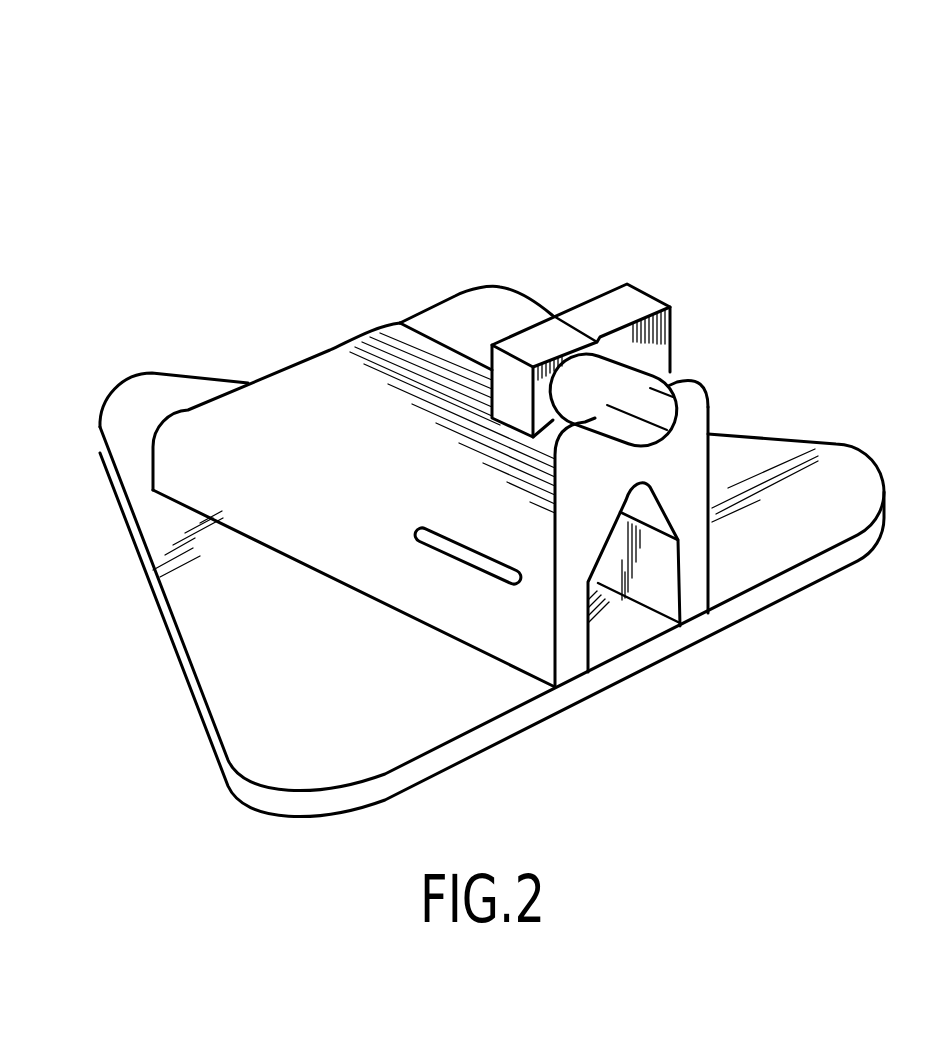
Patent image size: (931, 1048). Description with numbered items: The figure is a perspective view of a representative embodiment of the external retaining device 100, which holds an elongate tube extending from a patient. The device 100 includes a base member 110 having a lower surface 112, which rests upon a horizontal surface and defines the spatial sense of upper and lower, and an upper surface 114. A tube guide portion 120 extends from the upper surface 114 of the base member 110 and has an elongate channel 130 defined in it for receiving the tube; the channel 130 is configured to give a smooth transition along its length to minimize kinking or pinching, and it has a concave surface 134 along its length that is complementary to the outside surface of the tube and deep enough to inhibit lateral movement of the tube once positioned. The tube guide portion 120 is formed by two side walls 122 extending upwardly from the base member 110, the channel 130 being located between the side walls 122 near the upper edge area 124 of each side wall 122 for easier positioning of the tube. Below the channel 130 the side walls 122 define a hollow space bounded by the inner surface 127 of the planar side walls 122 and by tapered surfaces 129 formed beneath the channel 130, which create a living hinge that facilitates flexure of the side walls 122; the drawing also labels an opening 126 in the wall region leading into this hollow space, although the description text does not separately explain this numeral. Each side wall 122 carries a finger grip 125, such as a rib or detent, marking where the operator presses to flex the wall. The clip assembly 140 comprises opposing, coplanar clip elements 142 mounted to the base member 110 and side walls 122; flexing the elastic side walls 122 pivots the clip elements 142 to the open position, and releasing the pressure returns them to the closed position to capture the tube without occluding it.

The external retaining device 100 is at (247, 160).
The base member 110 is at (287, 740).
The lower surface 112 is at (200, 723).
The upper surface 114 is at (218, 645).
The tube guide portion 120 is at (300, 397).
The side wall 122 is at (693, 563).
The upper edge area 124 is at (673, 371).
The finger grip 125 is at (496, 586).
The opening 126 is at (603, 623).
The inner surface 127 is at (660, 588).
The tapered surfaces 129 is at (642, 502).
The elongate channel 130 is at (473, 333).
The concave surface 134 is at (710, 404).
The clip assembly 140 is at (581, 294).
The clip elements 142 is at (667, 320).